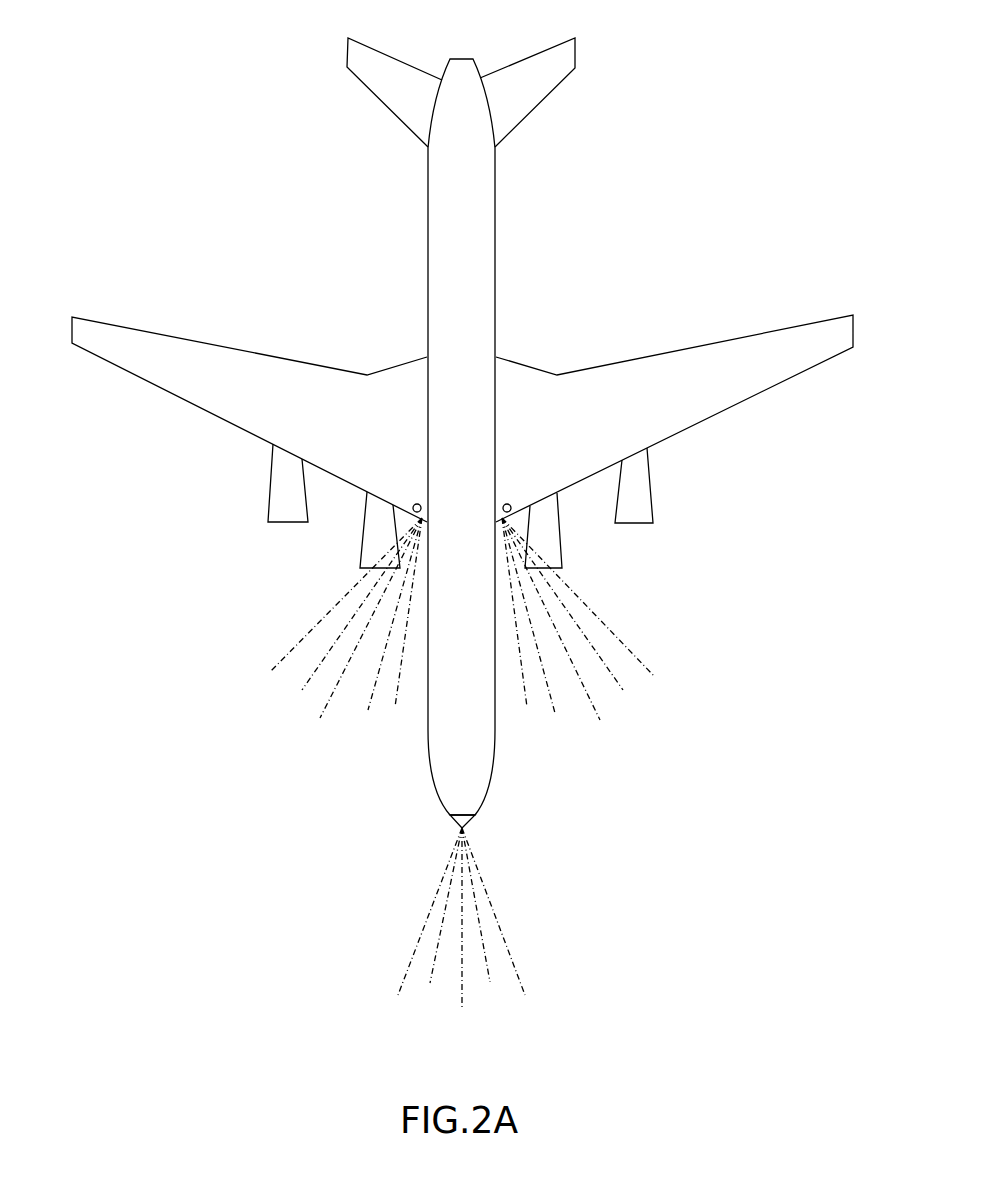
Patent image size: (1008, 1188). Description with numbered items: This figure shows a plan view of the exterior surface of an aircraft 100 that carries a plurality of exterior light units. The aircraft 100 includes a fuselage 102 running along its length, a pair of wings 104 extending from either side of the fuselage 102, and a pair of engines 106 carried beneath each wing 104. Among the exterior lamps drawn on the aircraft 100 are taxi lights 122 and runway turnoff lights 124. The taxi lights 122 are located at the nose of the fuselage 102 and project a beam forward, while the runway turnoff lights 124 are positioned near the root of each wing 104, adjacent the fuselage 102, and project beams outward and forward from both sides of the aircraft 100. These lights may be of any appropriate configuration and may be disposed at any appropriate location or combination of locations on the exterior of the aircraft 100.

The aircraft 100 is at (462, 522).
The fuselage 102 is at (428, 218).
The wings 104 is at (728, 342).
The engines 106 is at (655, 503).
The taxi lights 122 is at (472, 803).
The runway turnoff lights 124 is at (413, 497).